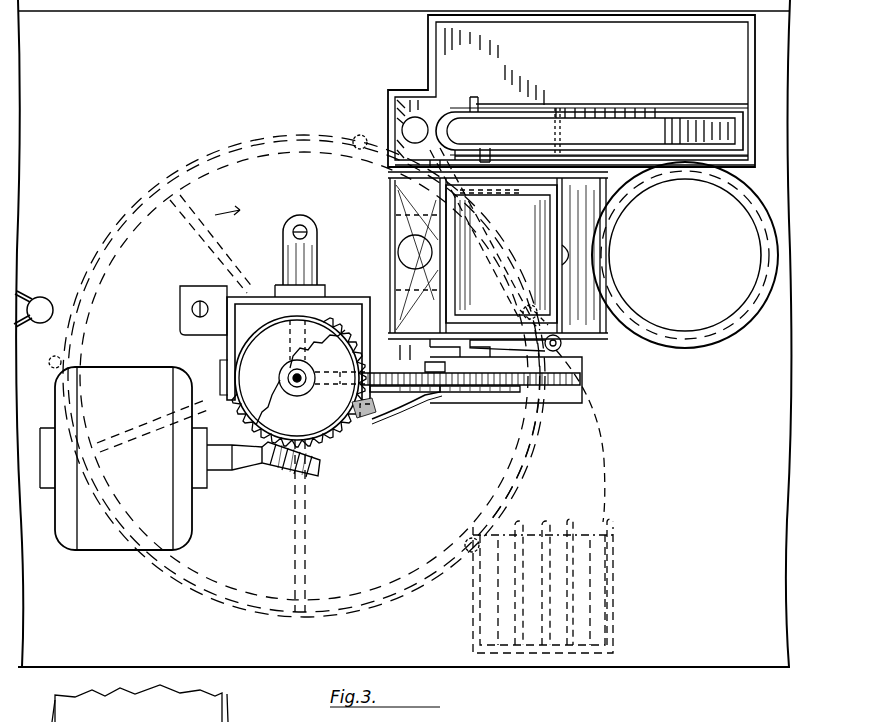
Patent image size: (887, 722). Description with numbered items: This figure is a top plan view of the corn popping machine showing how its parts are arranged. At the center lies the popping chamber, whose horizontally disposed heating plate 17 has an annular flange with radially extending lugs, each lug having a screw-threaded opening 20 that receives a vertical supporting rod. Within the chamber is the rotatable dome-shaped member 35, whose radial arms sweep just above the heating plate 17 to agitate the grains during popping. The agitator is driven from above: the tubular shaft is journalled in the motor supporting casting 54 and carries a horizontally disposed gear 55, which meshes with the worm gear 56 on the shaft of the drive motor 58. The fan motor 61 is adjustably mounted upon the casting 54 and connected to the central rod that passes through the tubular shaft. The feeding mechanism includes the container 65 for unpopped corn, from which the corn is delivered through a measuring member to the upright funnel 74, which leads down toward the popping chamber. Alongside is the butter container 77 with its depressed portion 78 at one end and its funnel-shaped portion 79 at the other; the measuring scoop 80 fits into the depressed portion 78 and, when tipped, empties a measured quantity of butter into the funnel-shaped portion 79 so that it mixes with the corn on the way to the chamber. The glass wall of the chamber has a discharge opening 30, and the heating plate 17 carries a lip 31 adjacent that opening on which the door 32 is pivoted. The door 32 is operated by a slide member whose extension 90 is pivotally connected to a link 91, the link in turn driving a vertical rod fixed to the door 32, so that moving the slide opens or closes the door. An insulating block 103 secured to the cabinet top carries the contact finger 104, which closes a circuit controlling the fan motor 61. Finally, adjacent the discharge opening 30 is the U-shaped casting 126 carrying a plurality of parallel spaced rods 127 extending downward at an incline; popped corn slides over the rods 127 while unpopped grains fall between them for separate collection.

The heating plate 17 is at (186, 585).
The screw-threaded opening 20 is at (54, 369).
The discharge opening 30 is at (500, 506).
The lip 31 is at (530, 452).
The door 32 is at (606, 455).
The dome-shaped member 35 is at (182, 215).
The motor supporting casting 54 is at (323, 296).
The gear 55 is at (358, 430).
The worm gear 56 is at (320, 470).
The motor 58 is at (100, 548).
The fan motor 61 is at (262, 354).
The container 65 is at (731, 300).
The funnel 74 is at (395, 194).
The butter container 77 is at (445, 68).
The depressed portion 78 is at (738, 160).
The funnel-shaped portion 79 is at (398, 112).
The measuring scoop 80 is at (535, 130).
The extension 90 is at (562, 345).
The link 91 is at (545, 330).
The insulating block 103 is at (376, 413).
The contact finger 104 is at (430, 402).
The U-shaped casting 126 is at (575, 528).
The rods 127 is at (570, 600).